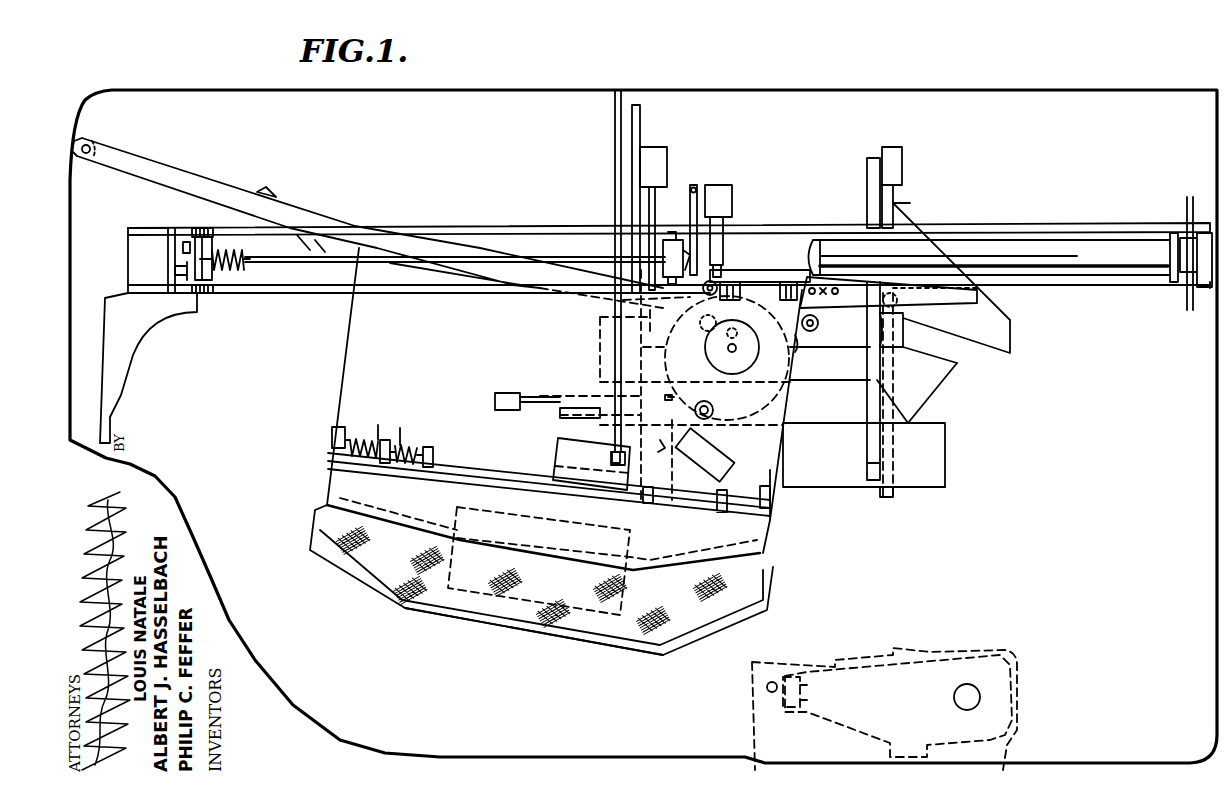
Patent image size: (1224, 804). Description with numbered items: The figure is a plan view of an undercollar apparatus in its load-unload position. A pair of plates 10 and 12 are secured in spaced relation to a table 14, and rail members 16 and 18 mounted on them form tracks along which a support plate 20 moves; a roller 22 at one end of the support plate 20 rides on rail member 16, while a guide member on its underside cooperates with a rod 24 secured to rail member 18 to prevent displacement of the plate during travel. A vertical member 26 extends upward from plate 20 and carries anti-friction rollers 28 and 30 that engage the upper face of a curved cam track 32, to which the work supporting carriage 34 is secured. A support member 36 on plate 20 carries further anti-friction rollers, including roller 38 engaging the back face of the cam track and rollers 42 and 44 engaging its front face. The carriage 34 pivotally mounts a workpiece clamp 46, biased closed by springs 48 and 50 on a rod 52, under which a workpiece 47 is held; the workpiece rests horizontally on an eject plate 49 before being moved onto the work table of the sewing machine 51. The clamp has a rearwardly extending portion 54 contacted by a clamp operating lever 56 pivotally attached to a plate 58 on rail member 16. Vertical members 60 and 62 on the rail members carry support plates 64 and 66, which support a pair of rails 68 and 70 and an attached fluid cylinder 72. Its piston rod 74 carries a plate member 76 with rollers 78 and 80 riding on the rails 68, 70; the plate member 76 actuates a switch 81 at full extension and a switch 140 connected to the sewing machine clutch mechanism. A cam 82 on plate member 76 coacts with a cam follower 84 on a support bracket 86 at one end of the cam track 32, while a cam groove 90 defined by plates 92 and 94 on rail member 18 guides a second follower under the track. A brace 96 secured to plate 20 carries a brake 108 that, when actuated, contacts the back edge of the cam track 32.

The plate 10 is at (845, 485).
The plate 12 is at (853, 380).
The table 14 is at (995, 100).
The rail member 16 is at (648, 421).
The rail member 18 is at (893, 455).
The support plate 20 is at (868, 387).
The roller 22 is at (607, 346).
The rod 24 is at (866, 206).
The vertical member 26 is at (764, 271).
The anti-friction roller 28 is at (744, 302).
The anti-friction roller 30 is at (822, 306).
The curved cam track 32 is at (322, 226).
The work supporting carriage 34 is at (783, 485).
The support member 36 is at (800, 346).
The anti-friction roller 38 is at (630, 307).
The anti-friction roller 42 is at (703, 326).
The anti-friction roller 44 is at (819, 325).
The workpiece clamp 46 is at (325, 487).
The workpiece 47 is at (388, 578).
The spring 48 is at (358, 436).
The eject plate 49 is at (598, 644).
The spring 50 is at (405, 443).
The sewing machine 51 is at (1010, 666).
The rod 52 is at (472, 459).
The rearwardly extending portion 54 is at (563, 452).
The clamp operating lever 56 is at (613, 205).
The plate 58 is at (642, 130).
The vertical member 60 is at (667, 166).
The vertical member 62 is at (902, 166).
The support plate 64 is at (655, 212).
The support plate 66 is at (895, 196).
The rail 68 is at (1035, 228).
The rail 70 is at (1065, 282).
The fluid cylinder 72 is at (994, 252).
The piston rod 74 is at (508, 256).
The plate member 76 is at (230, 276).
The roller 78 is at (205, 228).
The roller 80 is at (205, 294).
The switch 81 is at (137, 243).
The cam 82 is at (120, 360).
The cam follower 84 is at (91, 143).
The support bracket 86 is at (180, 172).
The cam groove 90 is at (957, 356).
The plate 92 is at (935, 396).
The plate 94 is at (1013, 321).
The brace 96 is at (696, 186).
The brake 108 is at (733, 204).
The switch 140 is at (684, 256).